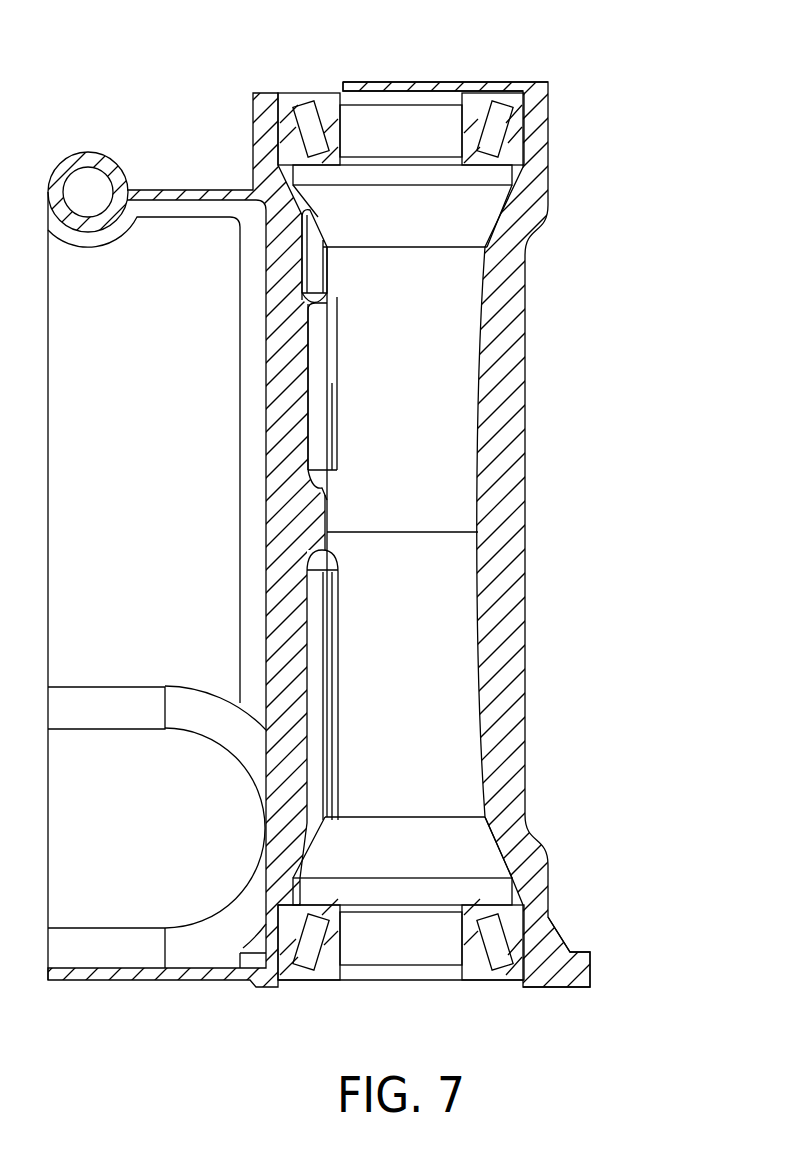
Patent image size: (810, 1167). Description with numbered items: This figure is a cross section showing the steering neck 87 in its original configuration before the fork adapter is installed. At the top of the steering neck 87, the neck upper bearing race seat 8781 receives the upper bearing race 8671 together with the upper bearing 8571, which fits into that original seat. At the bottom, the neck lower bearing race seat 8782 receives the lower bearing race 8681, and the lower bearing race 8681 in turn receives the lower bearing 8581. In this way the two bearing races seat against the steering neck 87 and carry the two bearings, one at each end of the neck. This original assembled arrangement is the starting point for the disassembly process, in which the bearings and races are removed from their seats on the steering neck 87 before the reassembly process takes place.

The steering neck 87 is at (524, 475).
The upper bearing 8571 is at (310, 100).
The lower bearing 8581 is at (317, 960).
The upper bearing race 8671 is at (547, 145).
The neck upper bearing race seat 8781 is at (548, 118).
The lower bearing race 8681 is at (548, 913).
The neck lower bearing race seat 8782 is at (538, 968).